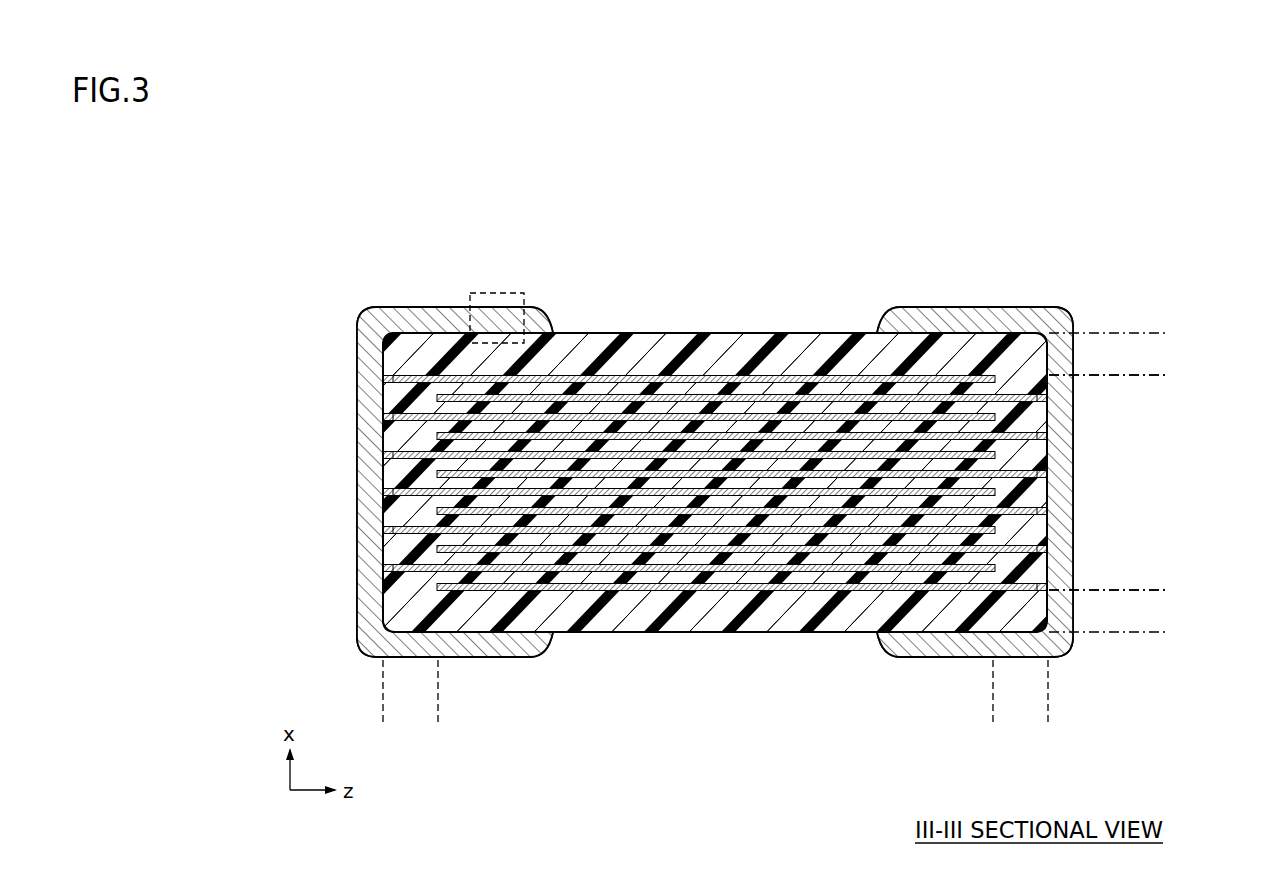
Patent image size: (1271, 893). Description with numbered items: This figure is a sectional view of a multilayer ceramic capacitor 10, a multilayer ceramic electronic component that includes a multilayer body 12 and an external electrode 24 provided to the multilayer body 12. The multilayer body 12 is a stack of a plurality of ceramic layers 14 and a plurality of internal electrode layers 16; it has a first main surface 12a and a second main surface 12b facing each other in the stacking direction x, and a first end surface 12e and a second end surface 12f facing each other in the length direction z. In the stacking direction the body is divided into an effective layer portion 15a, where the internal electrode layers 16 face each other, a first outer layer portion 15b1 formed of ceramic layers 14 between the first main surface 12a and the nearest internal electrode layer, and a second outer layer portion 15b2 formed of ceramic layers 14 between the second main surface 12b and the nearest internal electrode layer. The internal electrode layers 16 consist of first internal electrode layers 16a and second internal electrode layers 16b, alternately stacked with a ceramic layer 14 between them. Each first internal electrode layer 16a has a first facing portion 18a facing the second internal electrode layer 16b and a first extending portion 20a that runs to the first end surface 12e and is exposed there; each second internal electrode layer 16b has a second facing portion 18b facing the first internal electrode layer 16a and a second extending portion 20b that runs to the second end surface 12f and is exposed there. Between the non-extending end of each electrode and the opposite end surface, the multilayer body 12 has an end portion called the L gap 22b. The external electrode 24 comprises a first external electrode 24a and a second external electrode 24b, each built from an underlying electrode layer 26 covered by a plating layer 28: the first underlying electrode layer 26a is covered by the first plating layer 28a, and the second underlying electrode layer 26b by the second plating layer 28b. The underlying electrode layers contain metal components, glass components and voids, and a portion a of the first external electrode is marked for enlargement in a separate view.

The multilayer ceramic capacitor 10 is at (327, 303).
The multilayer body 12 is at (815, 332).
The first main surface 12a is at (855, 333).
The second main surface 12b is at (851, 634).
The first end surface 12e is at (383, 462).
The second end surface 12f is at (1049, 522).
The ceramic layer 14 is at (790, 440).
The effective layer portion 15a is at (1165, 375).
The first outer layer portion 15b1 is at (1165, 333).
The second outer layer portion 15b2 is at (1165, 590).
The internal electrode layer 16 is at (715, 492).
The first internal electrode layer 16a is at (593, 417).
The second internal electrode layer 16b is at (625, 436).
The first facing portion 18a is at (670, 426).
The second facing portion 18b is at (716, 446).
The first extending portion 20a is at (386, 379).
The second extending portion 20b is at (1050, 398).
The L gap 22b is at (438, 723).
The external electrode 24 is at (715, 432).
The first external electrode 24a is at (480, 252).
The second external electrode 24b is at (1045, 252).
The underlying electrode layer 26 is at (715, 462).
The first underlying electrode layer 26a is at (399, 327).
The second underlying electrode layer 26b is at (958, 327).
The plating layer 28 is at (715, 457).
The first plating layer 28a is at (450, 314).
The second plating layer 28b is at (1005, 314).
The portion a is at (517, 295).